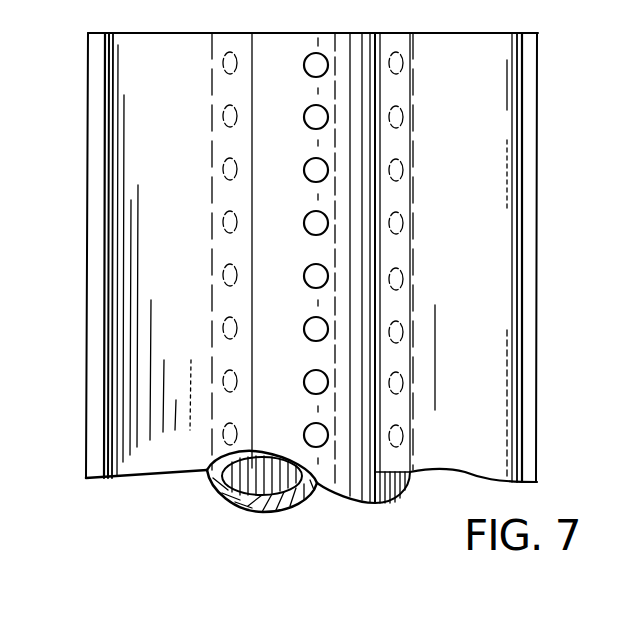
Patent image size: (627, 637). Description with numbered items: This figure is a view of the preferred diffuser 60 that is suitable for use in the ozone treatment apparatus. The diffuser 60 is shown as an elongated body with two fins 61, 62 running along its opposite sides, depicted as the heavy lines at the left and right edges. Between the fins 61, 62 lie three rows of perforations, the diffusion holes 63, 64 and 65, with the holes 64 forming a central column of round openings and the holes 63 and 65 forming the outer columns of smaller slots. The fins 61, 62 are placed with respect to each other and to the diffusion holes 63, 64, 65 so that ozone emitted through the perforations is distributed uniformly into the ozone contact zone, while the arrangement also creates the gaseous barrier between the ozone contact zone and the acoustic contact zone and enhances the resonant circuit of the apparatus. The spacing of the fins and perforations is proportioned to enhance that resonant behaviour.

The diffuser 60 is at (207, 490).
The fin 61 is at (120, 330).
The fin 62 is at (503, 270).
The perforations 63 is at (222, 118).
The perforations 64 is at (318, 110).
The perforations 65 is at (403, 120).